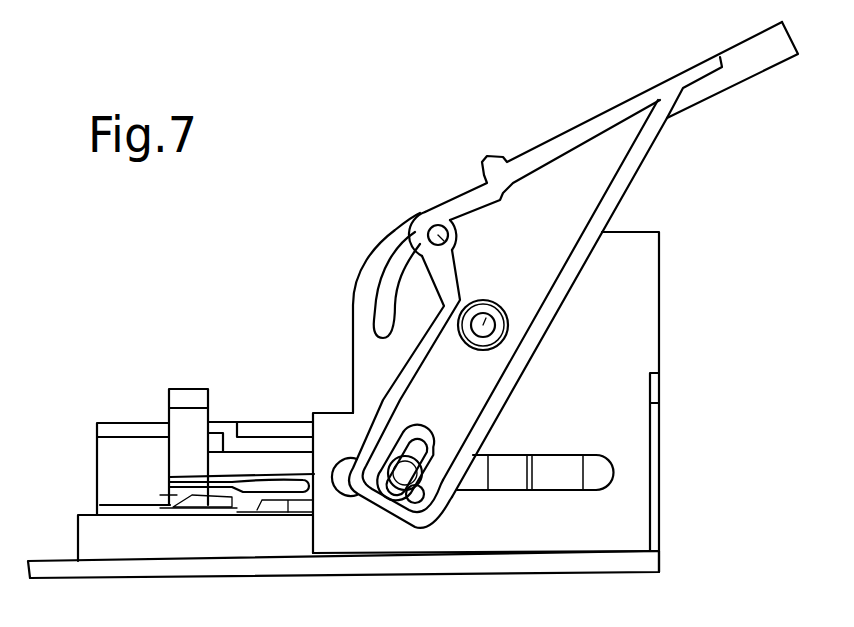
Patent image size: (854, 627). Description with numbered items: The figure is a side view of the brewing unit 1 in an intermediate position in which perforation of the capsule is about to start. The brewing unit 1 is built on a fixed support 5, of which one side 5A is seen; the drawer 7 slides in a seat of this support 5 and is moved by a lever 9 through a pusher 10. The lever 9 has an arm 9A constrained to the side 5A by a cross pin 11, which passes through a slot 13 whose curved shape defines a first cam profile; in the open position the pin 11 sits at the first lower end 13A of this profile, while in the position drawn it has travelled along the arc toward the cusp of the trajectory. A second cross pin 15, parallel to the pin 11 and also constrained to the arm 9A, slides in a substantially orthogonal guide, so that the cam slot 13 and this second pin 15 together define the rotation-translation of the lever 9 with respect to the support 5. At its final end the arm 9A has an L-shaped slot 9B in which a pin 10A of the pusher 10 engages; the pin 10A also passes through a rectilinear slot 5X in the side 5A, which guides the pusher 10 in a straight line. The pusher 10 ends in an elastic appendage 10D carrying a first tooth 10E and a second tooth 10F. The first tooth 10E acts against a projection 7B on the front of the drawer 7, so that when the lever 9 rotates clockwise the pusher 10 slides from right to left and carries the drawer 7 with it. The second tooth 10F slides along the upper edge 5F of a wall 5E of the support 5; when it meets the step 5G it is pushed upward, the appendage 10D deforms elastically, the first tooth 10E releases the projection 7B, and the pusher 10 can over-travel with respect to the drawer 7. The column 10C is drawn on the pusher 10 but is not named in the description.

The brewing unit 1 is at (305, 340).
The support 5 is at (391, 566).
The side 5A is at (632, 262).
The wall 5E is at (88, 533).
The upper edge 5F is at (147, 510).
The step 5G is at (253, 513).
The slot 5X is at (577, 458).
The drawer 7 is at (91, 439).
The projection 7B is at (120, 513).
The lever 9 is at (528, 145).
The arm 9A is at (468, 396).
The slot 9B is at (421, 500).
The pusher 10 is at (280, 457).
The pin 10A is at (403, 478).
The slider column 10C is at (185, 397).
The elastic appendage 10D is at (212, 488).
The first tooth 10E is at (167, 495).
The second tooth 10F is at (233, 507).
The cross pin 11 is at (448, 238).
The slot 13 is at (407, 262).
The first lower end 13A is at (375, 300).
The second cross pin 15 is at (484, 324).